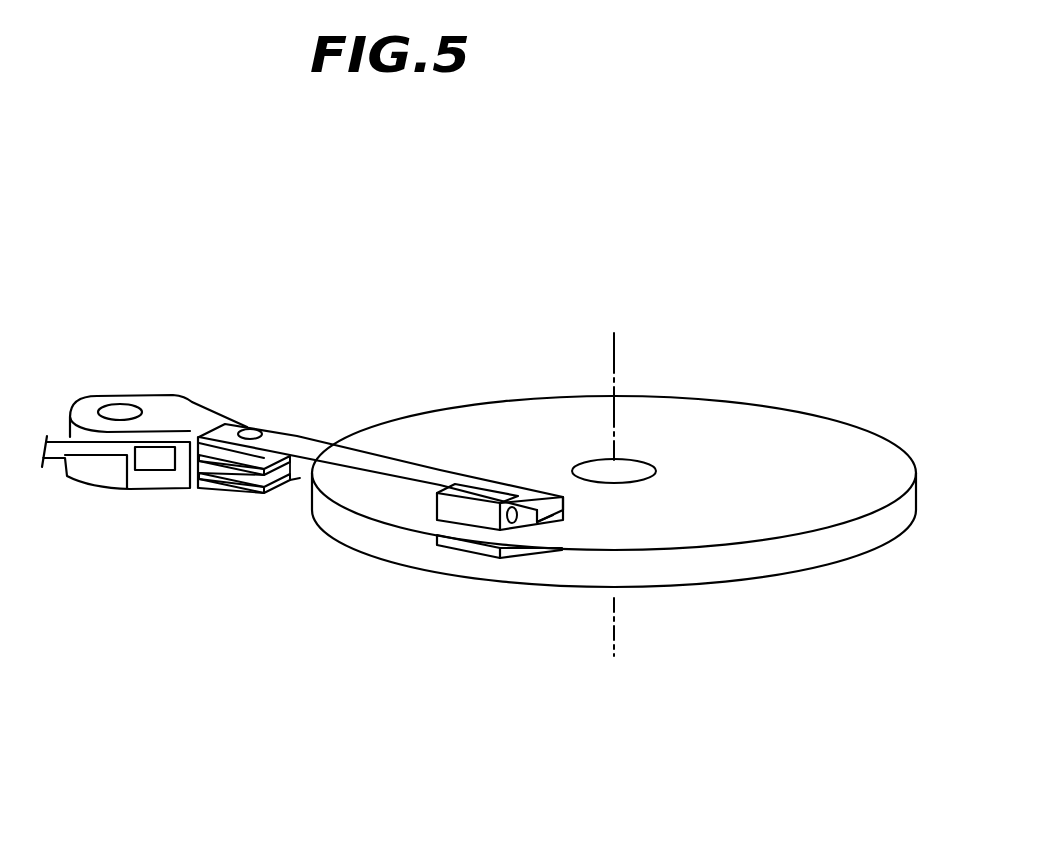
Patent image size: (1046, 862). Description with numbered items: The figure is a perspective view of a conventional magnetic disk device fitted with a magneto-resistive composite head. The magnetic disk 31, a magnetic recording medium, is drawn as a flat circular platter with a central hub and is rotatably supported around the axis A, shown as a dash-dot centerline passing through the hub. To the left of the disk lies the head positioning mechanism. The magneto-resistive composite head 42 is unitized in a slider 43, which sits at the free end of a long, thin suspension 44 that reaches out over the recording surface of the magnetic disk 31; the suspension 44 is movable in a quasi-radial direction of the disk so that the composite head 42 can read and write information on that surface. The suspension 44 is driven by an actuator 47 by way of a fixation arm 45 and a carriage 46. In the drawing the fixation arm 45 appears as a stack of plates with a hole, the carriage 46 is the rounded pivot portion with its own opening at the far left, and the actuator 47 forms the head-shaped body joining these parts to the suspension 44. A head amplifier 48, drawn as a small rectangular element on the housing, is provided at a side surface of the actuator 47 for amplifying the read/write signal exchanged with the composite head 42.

The magnetic disk 31 is at (745, 420).
The axis A is at (614, 363).
The magneto-resistive composite head 42 is at (515, 521).
The slider 43 is at (445, 500).
The suspension 44 is at (390, 466).
The fixation arm 45 is at (250, 429).
The carriage 46 is at (123, 395).
The actuator 47 is at (169, 363).
The head amplifier 48 is at (162, 462).